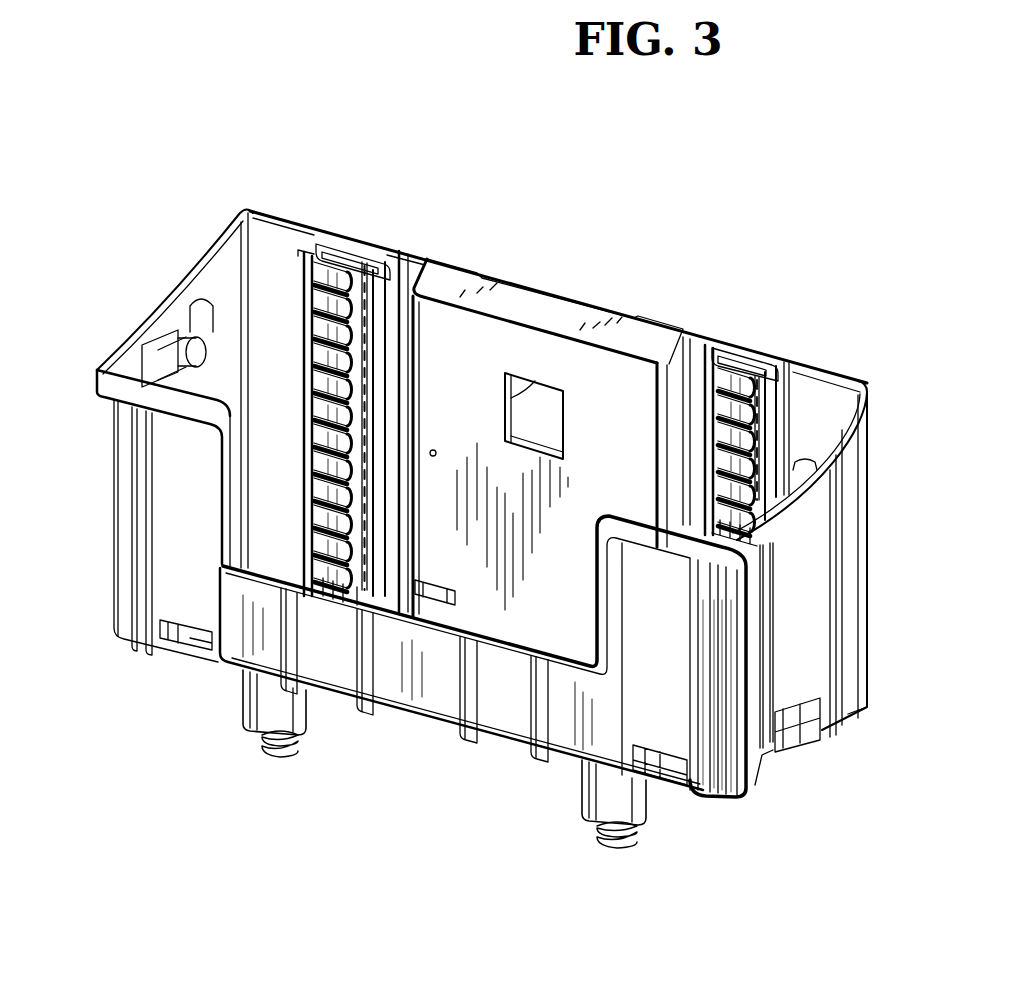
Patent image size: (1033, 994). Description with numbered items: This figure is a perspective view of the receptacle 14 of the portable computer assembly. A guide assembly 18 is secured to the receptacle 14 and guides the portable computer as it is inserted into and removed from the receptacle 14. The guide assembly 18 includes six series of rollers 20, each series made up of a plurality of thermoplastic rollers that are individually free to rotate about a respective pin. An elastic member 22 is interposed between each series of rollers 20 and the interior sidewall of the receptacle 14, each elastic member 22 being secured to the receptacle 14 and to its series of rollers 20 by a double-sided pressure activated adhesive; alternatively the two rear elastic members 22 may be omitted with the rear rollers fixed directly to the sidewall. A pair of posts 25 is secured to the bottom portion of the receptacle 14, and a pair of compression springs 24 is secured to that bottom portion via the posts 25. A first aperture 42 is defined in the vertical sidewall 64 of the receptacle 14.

The receptacle 14 is at (123, 532).
The guide assembly 18 is at (298, 253).
The series of rollers 20 is at (322, 290).
The elastic member 22 is at (352, 256).
The compression spring 24 is at (279, 760).
The post 25 is at (263, 713).
The first aperture 42 is at (512, 395).
The vertical sidewall 64 is at (560, 363).